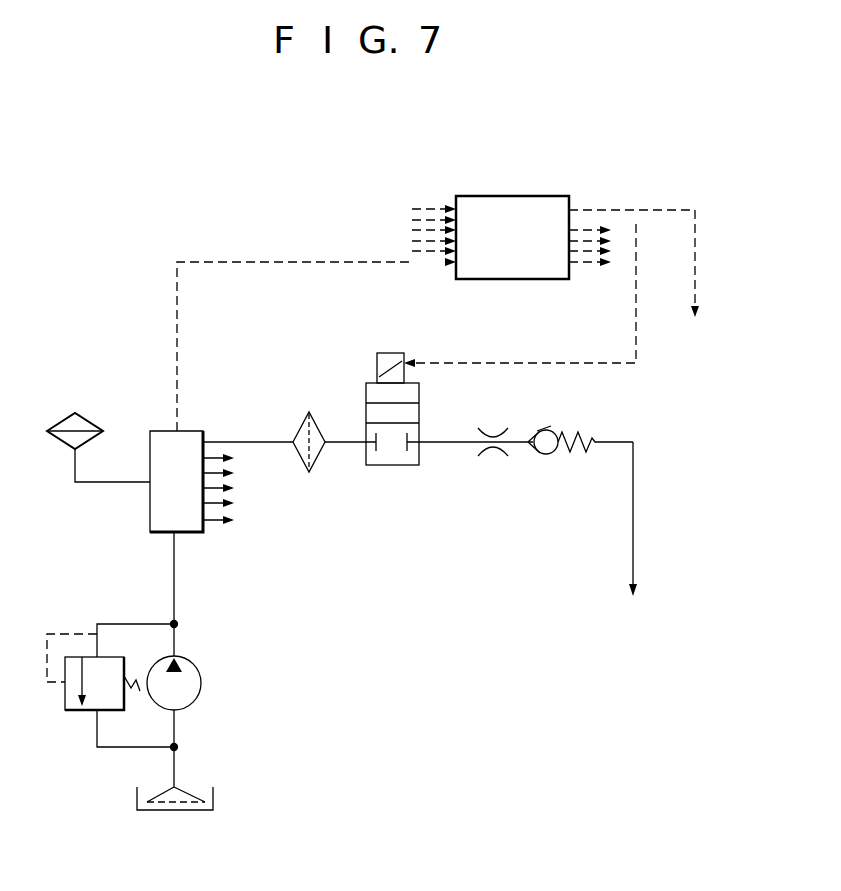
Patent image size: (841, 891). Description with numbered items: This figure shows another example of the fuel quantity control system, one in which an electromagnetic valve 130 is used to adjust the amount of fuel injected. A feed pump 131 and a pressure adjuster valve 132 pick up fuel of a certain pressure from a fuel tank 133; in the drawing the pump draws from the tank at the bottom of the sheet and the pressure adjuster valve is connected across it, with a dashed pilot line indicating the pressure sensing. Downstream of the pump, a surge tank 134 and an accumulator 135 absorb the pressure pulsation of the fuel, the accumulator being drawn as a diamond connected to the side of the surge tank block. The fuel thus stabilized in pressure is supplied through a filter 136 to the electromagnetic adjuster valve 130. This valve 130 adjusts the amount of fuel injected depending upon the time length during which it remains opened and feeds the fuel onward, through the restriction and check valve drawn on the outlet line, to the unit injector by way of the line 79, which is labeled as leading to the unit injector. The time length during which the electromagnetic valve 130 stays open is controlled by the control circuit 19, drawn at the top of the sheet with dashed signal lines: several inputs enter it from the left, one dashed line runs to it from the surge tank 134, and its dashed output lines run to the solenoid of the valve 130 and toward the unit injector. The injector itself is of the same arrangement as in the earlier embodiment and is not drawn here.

The control circuit 19 is at (541, 279).
The fuel supply line to unit injector 79 is at (633, 535).
The electromagnetic valve 130 is at (398, 465).
The feed pump 131 is at (199, 697).
The pressure adjuster valve 132 is at (68, 712).
The fuel tank 133 is at (192, 810).
The surge tank 134 is at (200, 431).
The accumulator 135 is at (86, 419).
The filter 136 is at (313, 420).